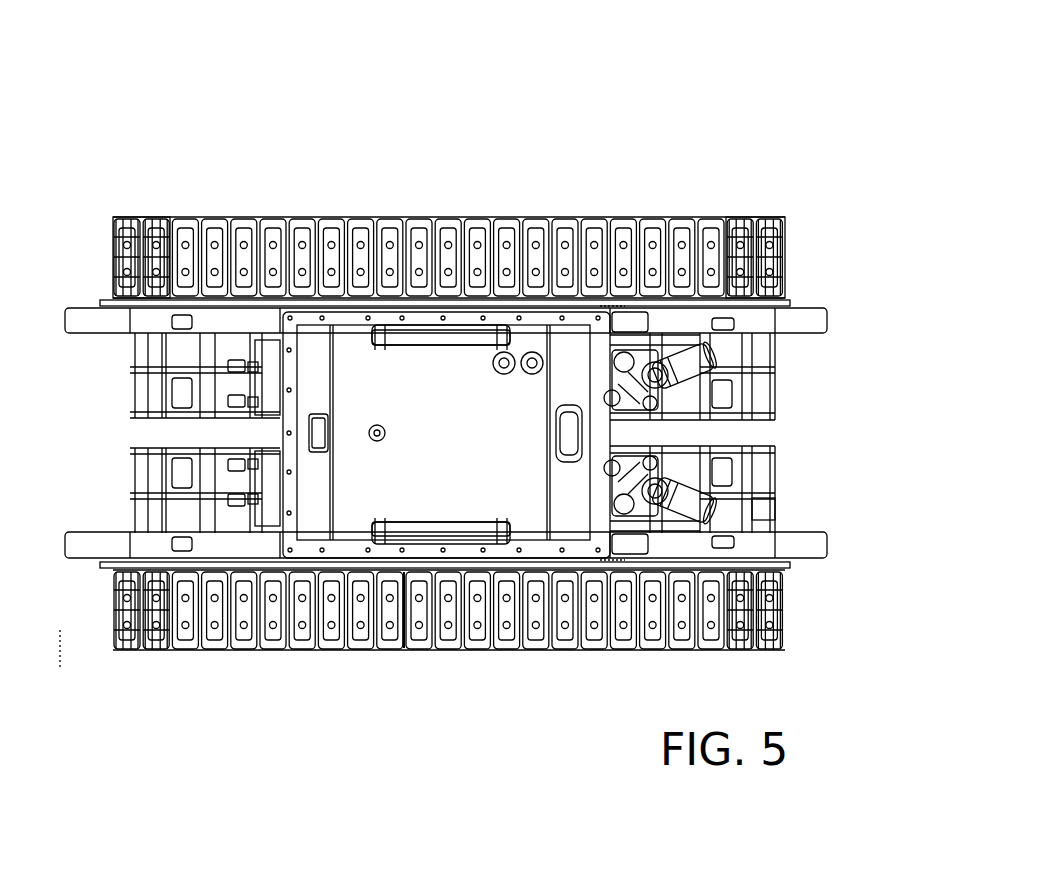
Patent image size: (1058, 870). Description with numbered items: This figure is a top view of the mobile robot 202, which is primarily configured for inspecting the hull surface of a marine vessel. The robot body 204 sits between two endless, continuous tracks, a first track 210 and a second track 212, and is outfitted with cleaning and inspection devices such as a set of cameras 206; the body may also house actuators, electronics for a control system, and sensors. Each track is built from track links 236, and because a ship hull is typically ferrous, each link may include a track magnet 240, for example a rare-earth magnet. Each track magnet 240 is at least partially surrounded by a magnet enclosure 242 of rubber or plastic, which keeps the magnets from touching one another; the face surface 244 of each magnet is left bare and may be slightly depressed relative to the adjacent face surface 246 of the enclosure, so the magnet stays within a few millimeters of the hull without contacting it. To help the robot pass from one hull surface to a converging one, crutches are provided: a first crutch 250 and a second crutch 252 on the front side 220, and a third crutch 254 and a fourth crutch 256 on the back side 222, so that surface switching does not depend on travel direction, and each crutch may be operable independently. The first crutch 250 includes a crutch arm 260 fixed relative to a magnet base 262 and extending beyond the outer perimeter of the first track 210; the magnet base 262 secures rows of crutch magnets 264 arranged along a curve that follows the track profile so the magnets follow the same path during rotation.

The mobile robot 202 is at (594, 108).
The robot body 204 is at (353, 352).
The cameras 206 is at (693, 502).
The first track 210 is at (118, 645).
The second track 212 is at (117, 217).
The front side 220 is at (741, 203).
The back side 222 is at (162, 202).
The track links 236 is at (183, 638).
The track magnet 240 is at (422, 255).
The magnet enclosure 242 is at (430, 232).
The face surface 244 is at (385, 611).
The adjacent face surface 246 is at (396, 647).
The first crutch 250 is at (760, 490).
The second crutch 252 is at (757, 337).
The third crutch 254 is at (167, 497).
The fourth crutch 256 is at (140, 334).
The crutch arm 260 is at (760, 543).
The magnet base 262 is at (745, 480).
The crutch magnets 264 is at (767, 513).